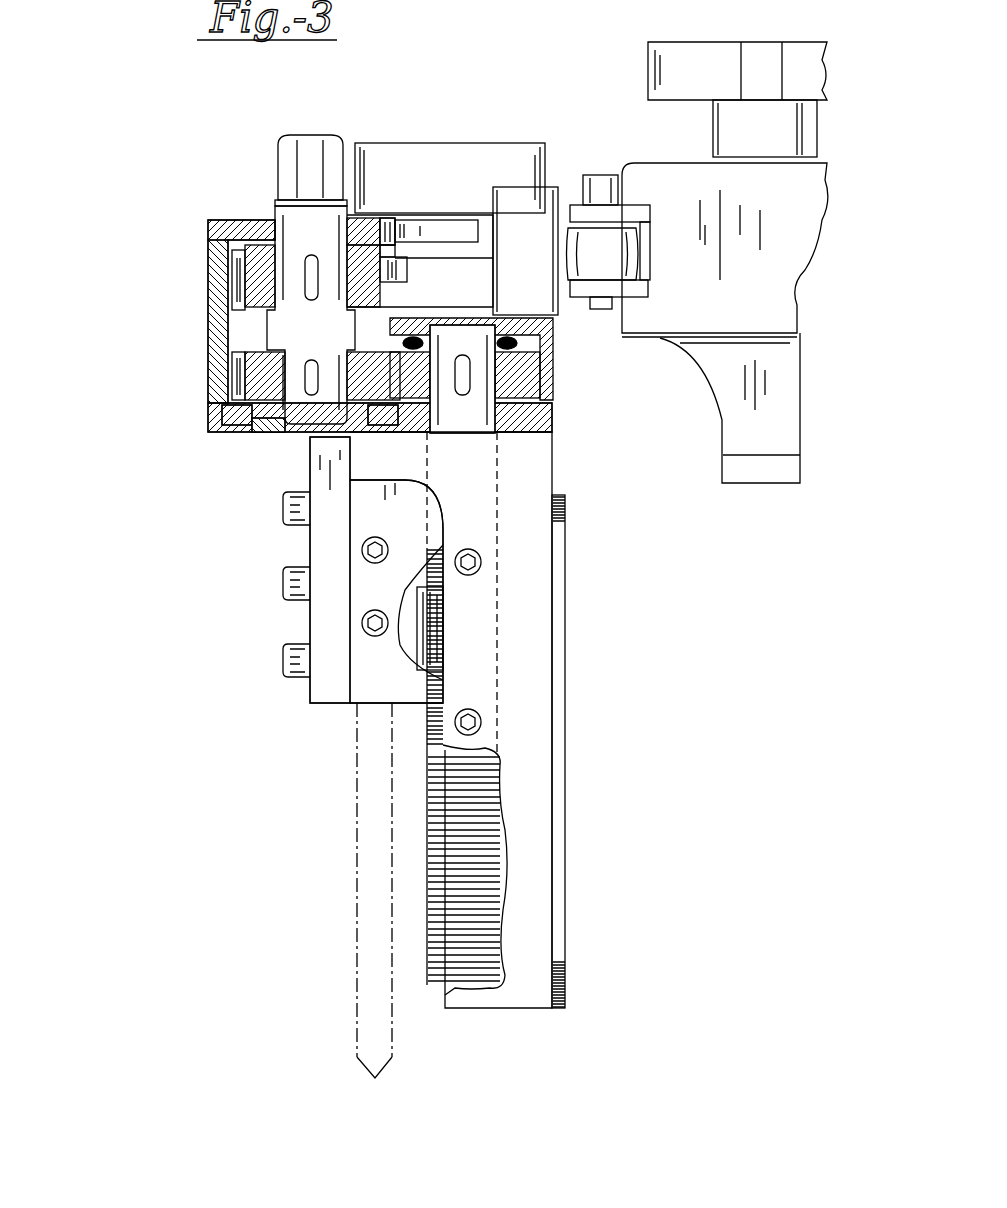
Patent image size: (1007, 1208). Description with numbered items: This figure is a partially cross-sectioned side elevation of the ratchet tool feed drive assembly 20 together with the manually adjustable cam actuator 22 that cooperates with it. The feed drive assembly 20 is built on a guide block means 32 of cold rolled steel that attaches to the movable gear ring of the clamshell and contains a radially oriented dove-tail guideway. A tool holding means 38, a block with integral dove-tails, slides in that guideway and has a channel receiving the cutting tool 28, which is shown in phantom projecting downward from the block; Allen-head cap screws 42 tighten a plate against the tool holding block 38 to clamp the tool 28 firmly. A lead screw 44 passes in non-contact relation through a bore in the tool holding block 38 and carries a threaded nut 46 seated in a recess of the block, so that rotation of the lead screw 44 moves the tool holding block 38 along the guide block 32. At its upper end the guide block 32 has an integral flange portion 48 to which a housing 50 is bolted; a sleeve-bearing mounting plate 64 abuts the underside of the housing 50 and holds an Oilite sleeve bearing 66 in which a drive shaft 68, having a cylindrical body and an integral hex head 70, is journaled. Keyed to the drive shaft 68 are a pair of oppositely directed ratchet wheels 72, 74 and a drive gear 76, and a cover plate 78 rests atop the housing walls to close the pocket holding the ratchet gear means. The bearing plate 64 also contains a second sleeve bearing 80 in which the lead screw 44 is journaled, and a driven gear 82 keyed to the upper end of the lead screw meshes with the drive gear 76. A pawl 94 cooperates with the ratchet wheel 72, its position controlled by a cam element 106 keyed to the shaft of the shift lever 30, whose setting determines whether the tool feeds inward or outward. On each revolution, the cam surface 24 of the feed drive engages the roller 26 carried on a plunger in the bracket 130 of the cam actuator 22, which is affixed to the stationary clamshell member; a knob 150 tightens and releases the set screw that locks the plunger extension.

The ratchet tool feed drive assembly 20 is at (300, 742).
The manually adjustable cam actuator 22 is at (638, 148).
The cam surface 24 is at (540, 187).
The roller 26 is at (620, 248).
The cutting tool 28 is at (355, 980).
The shift lever 30 is at (430, 143).
The guide block means 32 is at (530, 470).
The tool holding means 38 is at (380, 703).
The Allen-head cap screws 42 is at (283, 660).
The lead screw 44 is at (435, 985).
The threaded nut 46 is at (428, 625).
The flange portion 48 is at (320, 455).
The housing 50 is at (200, 243).
The sleeve-bearing mounting plate 64 is at (240, 438).
The sleeve bearing 66 is at (280, 438).
The drive shaft 68 is at (275, 215).
The hex head 70 is at (300, 135).
The ratchet wheel 72 is at (237, 262).
The ratchet wheel 74 is at (237, 290).
The drive gear 76 is at (243, 375).
The cover plate 78 is at (215, 220).
The second sleeve bearing 80 is at (530, 410).
The driven gear 82 is at (540, 378).
The pawl 94 is at (390, 243).
The cam element 106 is at (425, 275).
The bracket 130 is at (775, 315).
The knob 150 is at (712, 42).